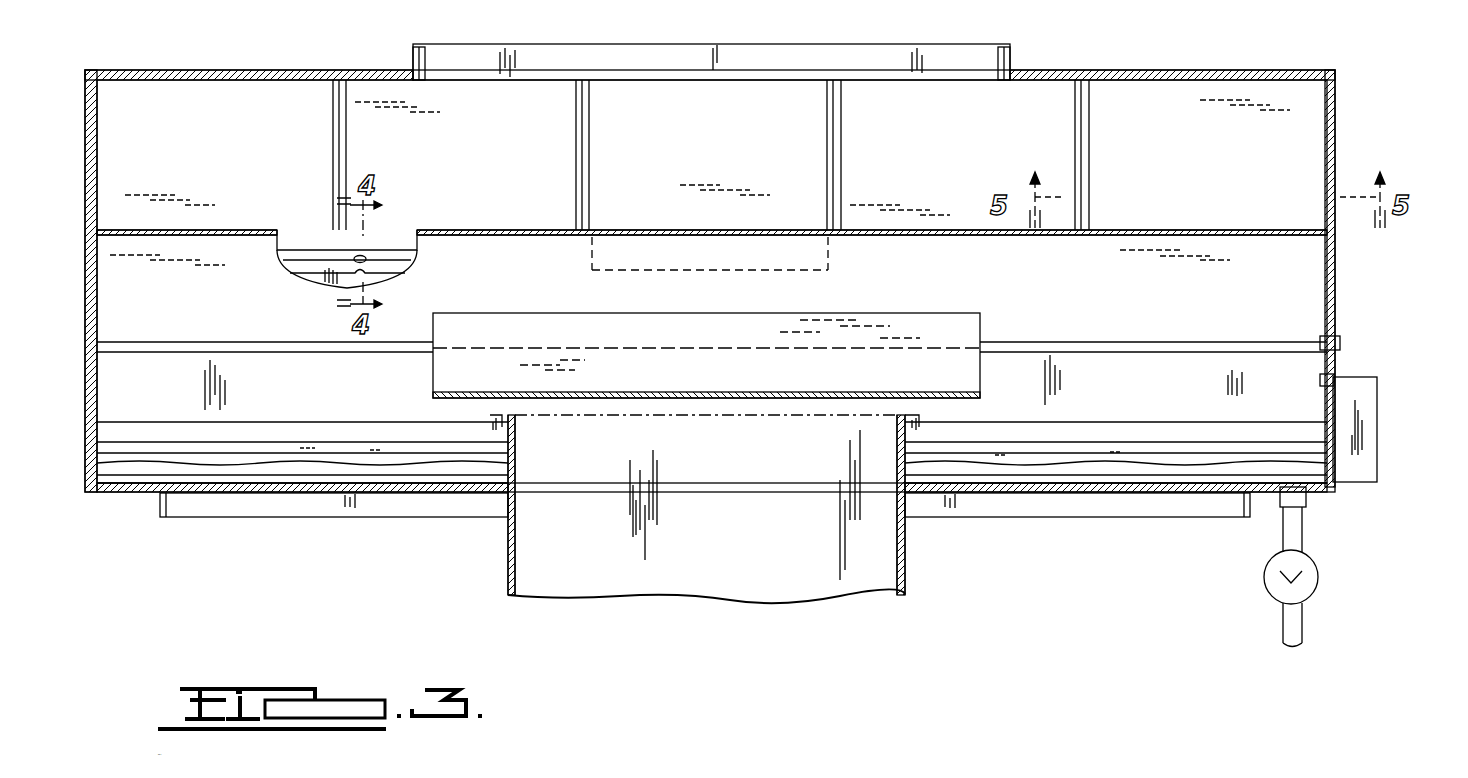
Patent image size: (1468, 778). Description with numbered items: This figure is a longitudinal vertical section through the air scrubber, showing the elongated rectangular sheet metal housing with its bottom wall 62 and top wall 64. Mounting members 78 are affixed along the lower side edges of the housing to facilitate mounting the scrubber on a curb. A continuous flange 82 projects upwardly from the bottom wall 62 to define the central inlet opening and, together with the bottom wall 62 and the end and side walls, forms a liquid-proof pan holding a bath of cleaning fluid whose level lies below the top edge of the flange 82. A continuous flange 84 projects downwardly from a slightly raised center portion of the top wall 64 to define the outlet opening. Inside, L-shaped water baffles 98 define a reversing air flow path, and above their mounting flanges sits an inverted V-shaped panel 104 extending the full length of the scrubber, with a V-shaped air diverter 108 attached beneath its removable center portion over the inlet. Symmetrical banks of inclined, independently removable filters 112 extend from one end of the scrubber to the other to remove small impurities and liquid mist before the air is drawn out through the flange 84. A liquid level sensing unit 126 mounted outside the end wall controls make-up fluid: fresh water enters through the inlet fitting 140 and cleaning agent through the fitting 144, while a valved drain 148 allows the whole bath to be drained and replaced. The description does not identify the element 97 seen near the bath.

The bottom wall 62 is at (1093, 493).
The top wall 64 is at (1228, 70).
The mounting members 78 is at (160, 508).
The continuous flange 82 is at (505, 443).
The continuous flange 84 is at (432, 64).
The water level 97 is at (352, 460).
The water baffle 98 is at (295, 397).
The panel 104 is at (195, 301).
The air diverter 108 is at (748, 383).
The filters 112 is at (240, 163).
The liquid level sensing unit 126 is at (1363, 414).
The inlet fitting 140 is at (1320, 380).
The fitting 144 is at (1340, 345).
The valved drain 148 is at (1288, 629).